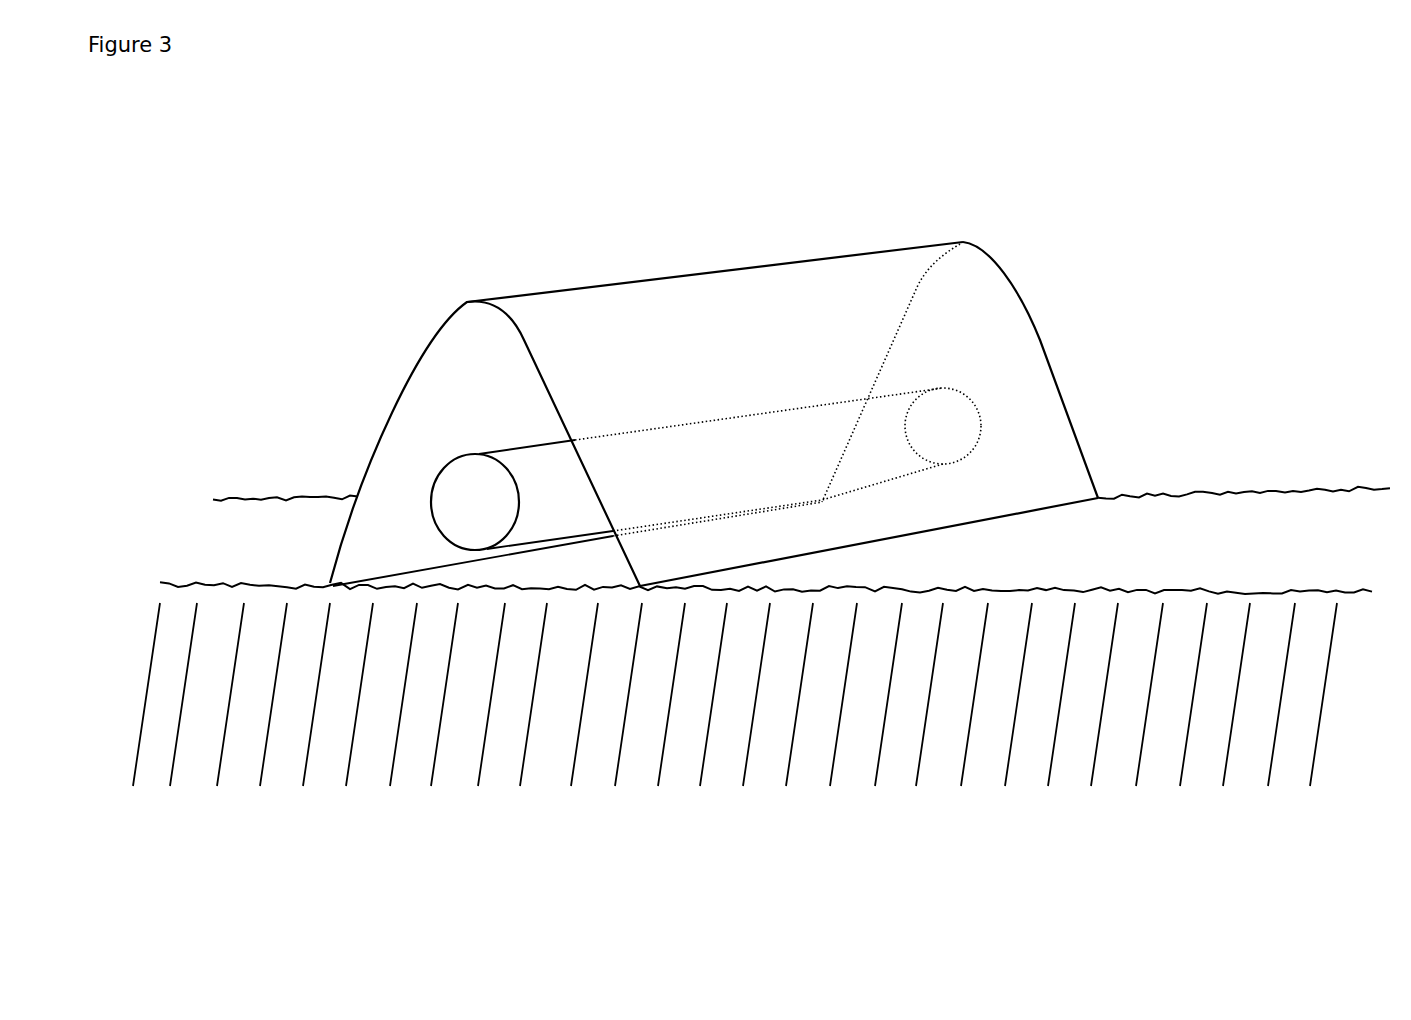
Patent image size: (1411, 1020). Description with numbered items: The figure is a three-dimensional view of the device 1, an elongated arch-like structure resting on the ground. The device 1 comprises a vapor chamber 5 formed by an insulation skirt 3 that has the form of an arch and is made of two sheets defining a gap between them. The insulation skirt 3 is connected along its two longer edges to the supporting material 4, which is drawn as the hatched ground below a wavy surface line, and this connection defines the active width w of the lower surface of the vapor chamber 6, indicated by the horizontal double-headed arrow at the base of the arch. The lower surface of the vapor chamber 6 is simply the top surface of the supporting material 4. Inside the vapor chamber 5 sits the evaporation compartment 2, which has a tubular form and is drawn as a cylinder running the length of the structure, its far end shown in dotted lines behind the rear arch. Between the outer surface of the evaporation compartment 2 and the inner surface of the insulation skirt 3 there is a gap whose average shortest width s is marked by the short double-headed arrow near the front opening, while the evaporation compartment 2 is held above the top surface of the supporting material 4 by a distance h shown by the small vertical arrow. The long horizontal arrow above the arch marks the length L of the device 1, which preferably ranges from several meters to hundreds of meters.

The device 1 is at (1030, 241).
The evaporation compartment 2 is at (565, 497).
The insulation skirt 3 is at (688, 303).
The supporting material 4 is at (837, 628).
The vapor chamber 5 is at (520, 408).
The lower surface of the vapor chamber 6 is at (527, 573).
The length L is at (473, 232).
The average shortest width s is at (428, 480).
The distance h is at (482, 582).
The active width w is at (637, 597).